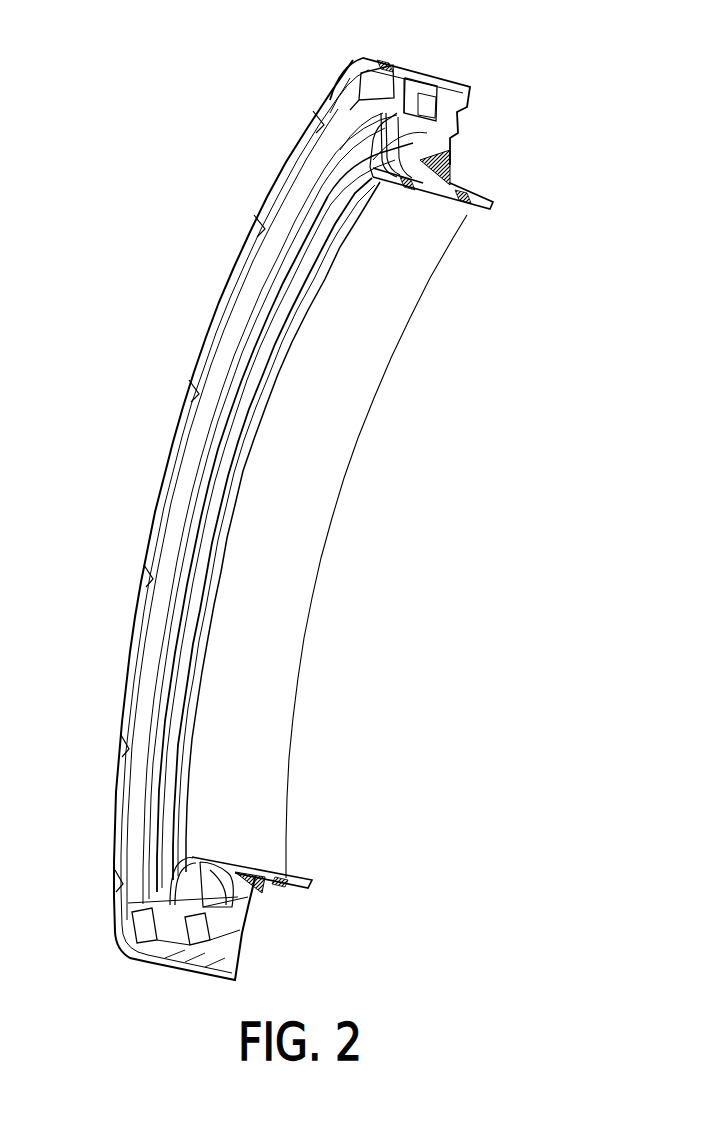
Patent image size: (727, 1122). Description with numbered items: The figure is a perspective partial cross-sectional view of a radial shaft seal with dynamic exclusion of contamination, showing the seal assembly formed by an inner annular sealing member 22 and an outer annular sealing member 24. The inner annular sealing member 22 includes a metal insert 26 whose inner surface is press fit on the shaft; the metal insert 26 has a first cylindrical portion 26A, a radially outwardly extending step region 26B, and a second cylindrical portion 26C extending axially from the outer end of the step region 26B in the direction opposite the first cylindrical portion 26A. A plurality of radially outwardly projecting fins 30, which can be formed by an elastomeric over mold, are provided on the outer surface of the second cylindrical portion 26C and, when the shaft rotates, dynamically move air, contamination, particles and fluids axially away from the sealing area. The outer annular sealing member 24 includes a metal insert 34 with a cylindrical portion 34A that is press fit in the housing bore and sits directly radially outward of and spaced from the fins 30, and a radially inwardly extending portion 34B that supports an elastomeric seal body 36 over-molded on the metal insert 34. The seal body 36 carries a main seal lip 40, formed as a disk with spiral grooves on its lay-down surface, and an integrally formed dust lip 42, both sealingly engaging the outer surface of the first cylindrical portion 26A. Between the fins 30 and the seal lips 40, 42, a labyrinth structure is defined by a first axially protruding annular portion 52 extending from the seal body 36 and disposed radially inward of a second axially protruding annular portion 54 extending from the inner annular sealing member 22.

The inner annular sealing member 22 is at (492, 232).
The outer annular sealing member 24 is at (512, 66).
The metal insert 26 is at (268, 846).
The first cylindrical portion 26A is at (283, 880).
The radially outwardly extending step region 26B is at (173, 853).
The second cylindrical portion 26C is at (135, 905).
The radially outwardly projecting fins 30 is at (313, 130).
The metal insert 34 is at (425, 78).
The cylindrical portion 34A is at (130, 645).
The radially inwardly extending portion 34B is at (226, 950).
The seal body 36 is at (490, 138).
The main seal lip 40 is at (456, 188).
The dust lip 42 is at (455, 158).
The first axially protruding annular portion 52 is at (378, 153).
The second axially protruding annular portion 54 is at (425, 105).